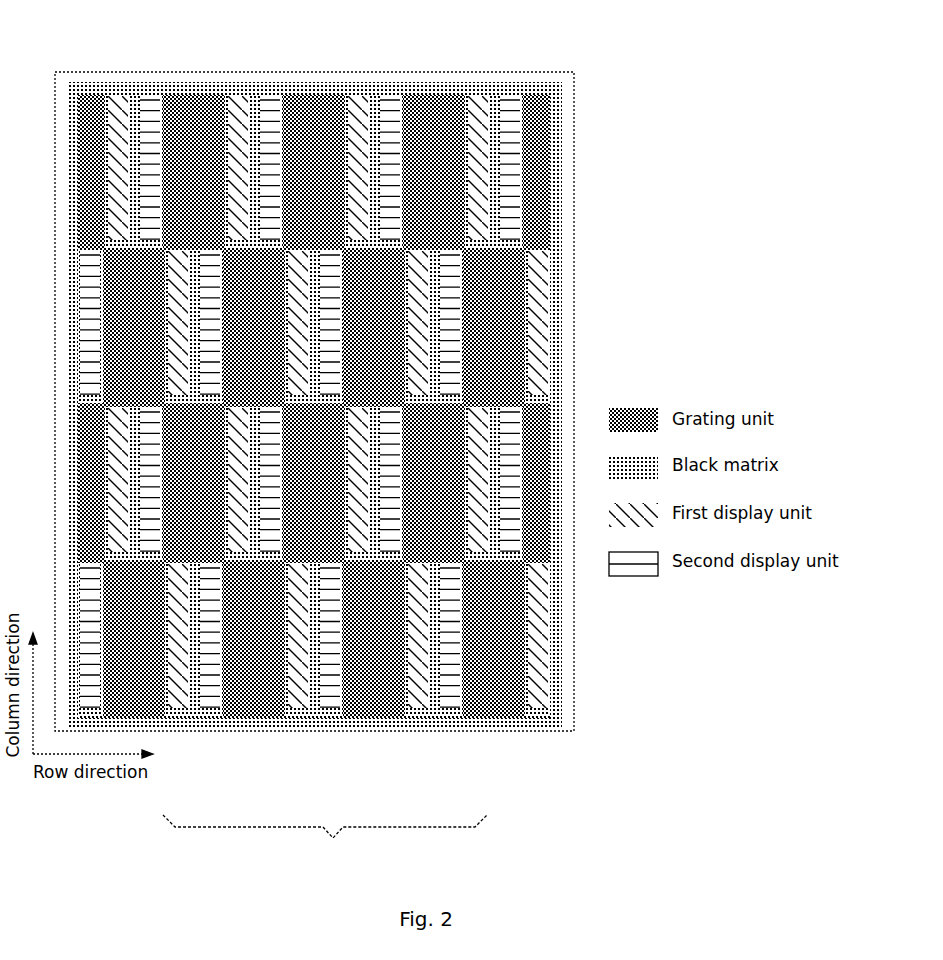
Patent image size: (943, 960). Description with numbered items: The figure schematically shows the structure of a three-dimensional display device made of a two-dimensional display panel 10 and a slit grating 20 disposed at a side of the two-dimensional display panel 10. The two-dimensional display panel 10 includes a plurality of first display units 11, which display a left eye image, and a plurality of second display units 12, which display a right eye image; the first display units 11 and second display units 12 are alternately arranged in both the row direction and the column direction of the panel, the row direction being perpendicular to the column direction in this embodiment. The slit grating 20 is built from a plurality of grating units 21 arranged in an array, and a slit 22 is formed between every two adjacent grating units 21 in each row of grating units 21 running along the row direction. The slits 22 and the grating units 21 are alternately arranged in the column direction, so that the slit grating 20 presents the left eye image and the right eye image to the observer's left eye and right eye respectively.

The two-dimensional display panel 10 is at (573, 142).
The first display unit 11 is at (116, 95).
The second display unit 12 is at (149, 95).
The slit grating 20 is at (325, 838).
The grating unit 21 is at (256, 718).
The slit 22 is at (193, 710).